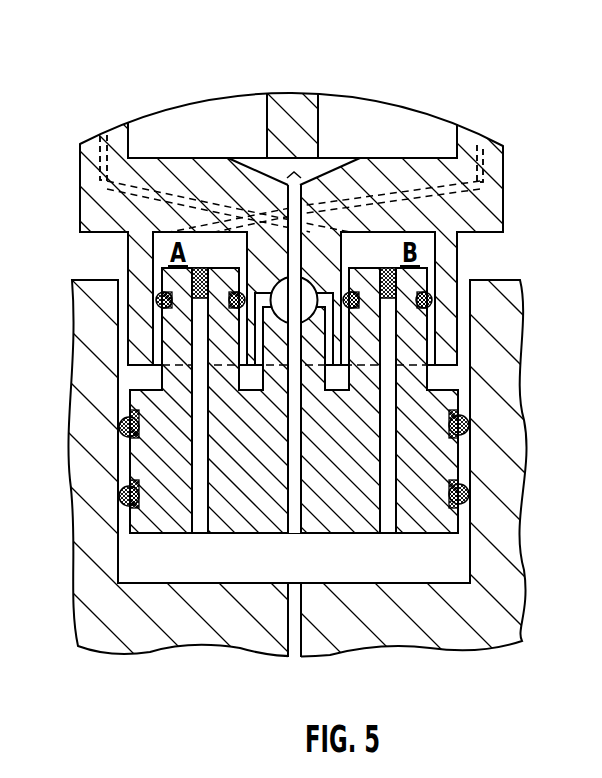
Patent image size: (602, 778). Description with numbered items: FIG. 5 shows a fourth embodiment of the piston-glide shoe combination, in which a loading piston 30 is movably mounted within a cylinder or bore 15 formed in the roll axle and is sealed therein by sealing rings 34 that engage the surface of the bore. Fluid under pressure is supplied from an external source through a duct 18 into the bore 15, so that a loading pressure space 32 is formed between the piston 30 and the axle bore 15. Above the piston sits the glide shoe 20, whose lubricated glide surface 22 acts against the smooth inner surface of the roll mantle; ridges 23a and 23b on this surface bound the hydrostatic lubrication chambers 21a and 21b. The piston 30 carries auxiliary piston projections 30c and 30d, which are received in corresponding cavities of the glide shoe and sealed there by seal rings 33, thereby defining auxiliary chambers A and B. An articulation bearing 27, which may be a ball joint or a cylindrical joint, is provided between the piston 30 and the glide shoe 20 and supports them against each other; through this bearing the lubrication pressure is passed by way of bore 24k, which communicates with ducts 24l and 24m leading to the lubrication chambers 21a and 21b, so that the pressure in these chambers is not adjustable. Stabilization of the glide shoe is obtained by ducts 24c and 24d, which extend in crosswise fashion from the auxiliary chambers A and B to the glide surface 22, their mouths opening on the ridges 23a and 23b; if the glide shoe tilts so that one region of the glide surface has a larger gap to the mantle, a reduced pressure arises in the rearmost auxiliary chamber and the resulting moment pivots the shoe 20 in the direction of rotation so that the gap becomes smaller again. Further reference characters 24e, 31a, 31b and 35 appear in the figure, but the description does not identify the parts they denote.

The axle bore 15 is at (468, 564).
The duct 18 is at (297, 652).
The glide shoe 20 is at (497, 221).
The hydrostatic lubrication chamber 21a is at (188, 120).
The hydrostatic lubrication chamber 21b is at (388, 123).
The glide surface 22 is at (460, 120).
The ridge 23a is at (117, 125).
The ridge 23b is at (500, 149).
The duct 24c is at (100, 158).
The duct 24d is at (503, 188).
The bore openings 24e is at (103, 136).
The bore 24k is at (297, 530).
The duct 24l is at (242, 160).
The duct 24m is at (345, 160).
The articulation bearing 27 is at (284, 297).
The loading piston 30 is at (337, 517).
The auxiliary piston projection 30c is at (172, 345).
The auxiliary piston projection 30d is at (414, 378).
The left piston channel 31a is at (192, 378).
The right piston channel 31b is at (388, 520).
The loading pressure space 32 is at (440, 572).
The seal ring 33 is at (158, 296).
The sealing ring 34 is at (119, 492).
The sleeve 35 is at (448, 458).